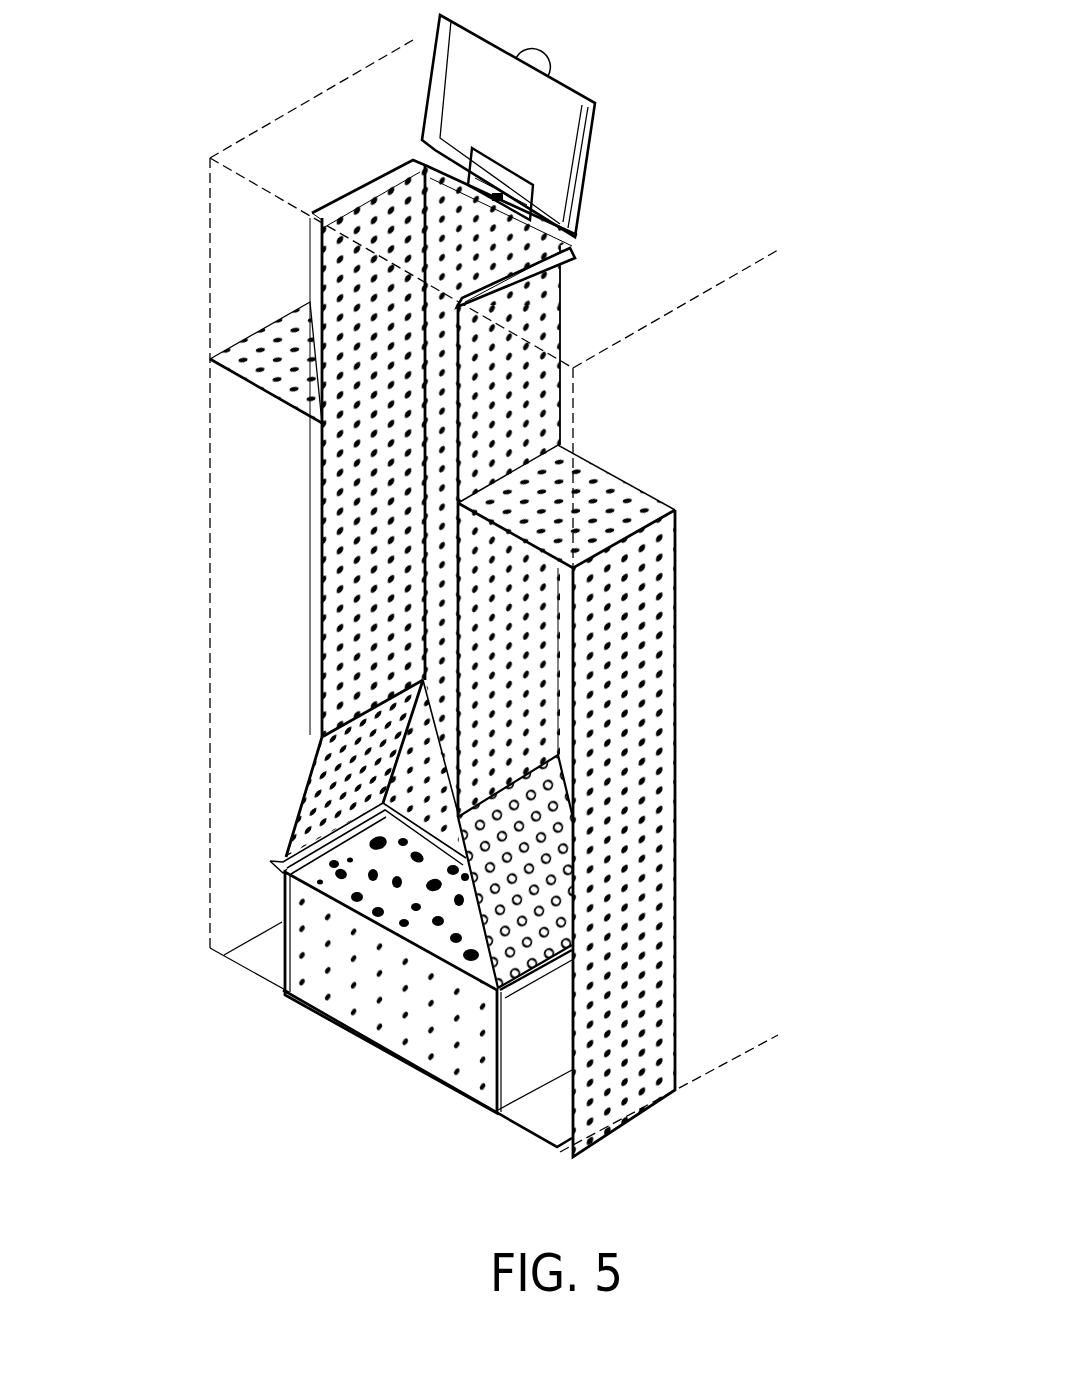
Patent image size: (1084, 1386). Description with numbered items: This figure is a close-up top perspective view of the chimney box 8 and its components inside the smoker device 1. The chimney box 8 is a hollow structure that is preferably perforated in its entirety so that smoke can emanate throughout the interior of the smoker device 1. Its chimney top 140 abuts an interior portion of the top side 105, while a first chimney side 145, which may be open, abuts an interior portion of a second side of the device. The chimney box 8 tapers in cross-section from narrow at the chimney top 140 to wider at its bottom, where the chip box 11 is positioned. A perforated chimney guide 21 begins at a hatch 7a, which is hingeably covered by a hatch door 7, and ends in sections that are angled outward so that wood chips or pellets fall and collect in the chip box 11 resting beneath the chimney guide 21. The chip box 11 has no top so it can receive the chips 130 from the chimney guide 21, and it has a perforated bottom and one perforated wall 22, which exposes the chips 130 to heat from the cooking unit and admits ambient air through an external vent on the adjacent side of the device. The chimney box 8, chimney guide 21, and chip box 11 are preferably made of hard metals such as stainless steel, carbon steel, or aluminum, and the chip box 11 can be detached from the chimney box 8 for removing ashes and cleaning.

The smoker device 1 is at (208, 247).
The hatch door 7 is at (518, 123).
The hatch 7a is at (413, 182).
The chimney top 140 is at (543, 248).
The top side 105 is at (700, 297).
The first chimney side 145 is at (224, 558).
The chimney box 8 is at (628, 495).
The chips 130 is at (370, 870).
The chimney guide 21 is at (490, 905).
The perforated wall 22 is at (317, 980).
The chip box 11 is at (520, 1043).